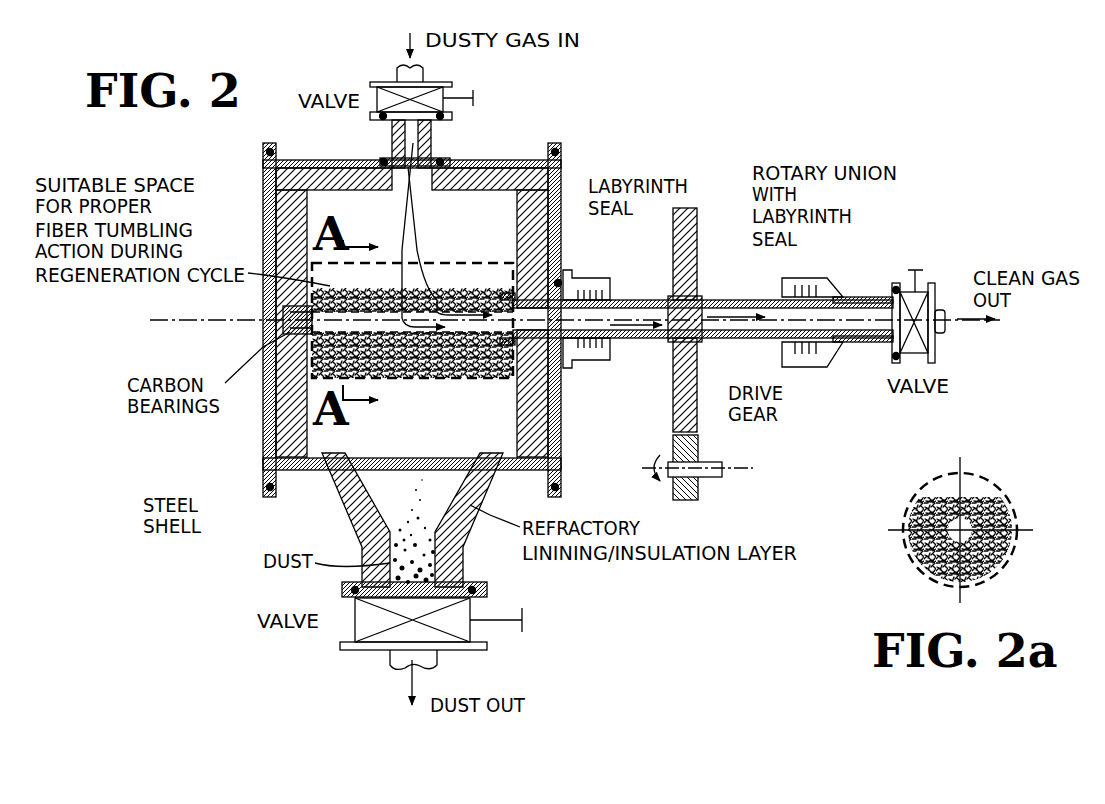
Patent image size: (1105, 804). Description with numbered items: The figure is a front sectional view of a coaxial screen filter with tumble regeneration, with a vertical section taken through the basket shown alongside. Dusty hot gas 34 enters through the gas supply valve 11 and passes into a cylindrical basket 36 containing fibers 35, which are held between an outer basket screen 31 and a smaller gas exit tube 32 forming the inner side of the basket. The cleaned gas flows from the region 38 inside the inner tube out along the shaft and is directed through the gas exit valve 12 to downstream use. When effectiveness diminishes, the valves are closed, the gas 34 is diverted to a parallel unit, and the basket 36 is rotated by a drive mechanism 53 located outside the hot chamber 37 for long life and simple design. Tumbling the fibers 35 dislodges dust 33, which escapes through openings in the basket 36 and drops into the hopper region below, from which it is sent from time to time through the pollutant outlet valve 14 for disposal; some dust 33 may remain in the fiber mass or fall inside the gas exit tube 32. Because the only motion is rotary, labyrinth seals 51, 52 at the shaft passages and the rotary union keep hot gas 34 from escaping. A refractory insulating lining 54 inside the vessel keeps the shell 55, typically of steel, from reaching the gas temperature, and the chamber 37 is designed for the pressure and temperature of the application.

In FIG. 2, the gas supply valve 11 is at (477, 93).
In FIG. 2, the gas exit valve 12 is at (917, 270).
In FIG. 2, the pollutant outlet valve 14 is at (357, 612).
In FIG. 2, the outer basket screen 31 is at (408, 380).
In FIG. 2a, the outer basket screen 31 is at (970, 472).
In FIG. 2, the gas exit tube 32 is at (478, 288).
In FIG. 2a, the gas exit tube 32 is at (907, 562).
In FIG. 2, the dust 33 is at (422, 533).
In FIG. 2, the hot gas 34 is at (405, 222).
In FIG. 2, the fibers 35 is at (463, 380).
In FIG. 2a, the fibers 35 is at (937, 500).
In FIG. 2, the cylindrical basket 36 is at (436, 250).
In FIG. 2a, the cylindrical basket 36 is at (941, 460).
In FIG. 2, the hot chamber 37 is at (428, 485).
In FIG. 2, the region inside the inner side 38 is at (285, 330).
In FIG. 2, the labyrinth seal 51 is at (587, 273).
In FIG. 2, the labyrinth seal 52 is at (800, 277).
In FIG. 2, the drive mechanism 53 is at (705, 445).
In FIG. 2, the refractory insulating lining 54 is at (337, 168).
In FIG. 2, the shell 55 is at (263, 480).